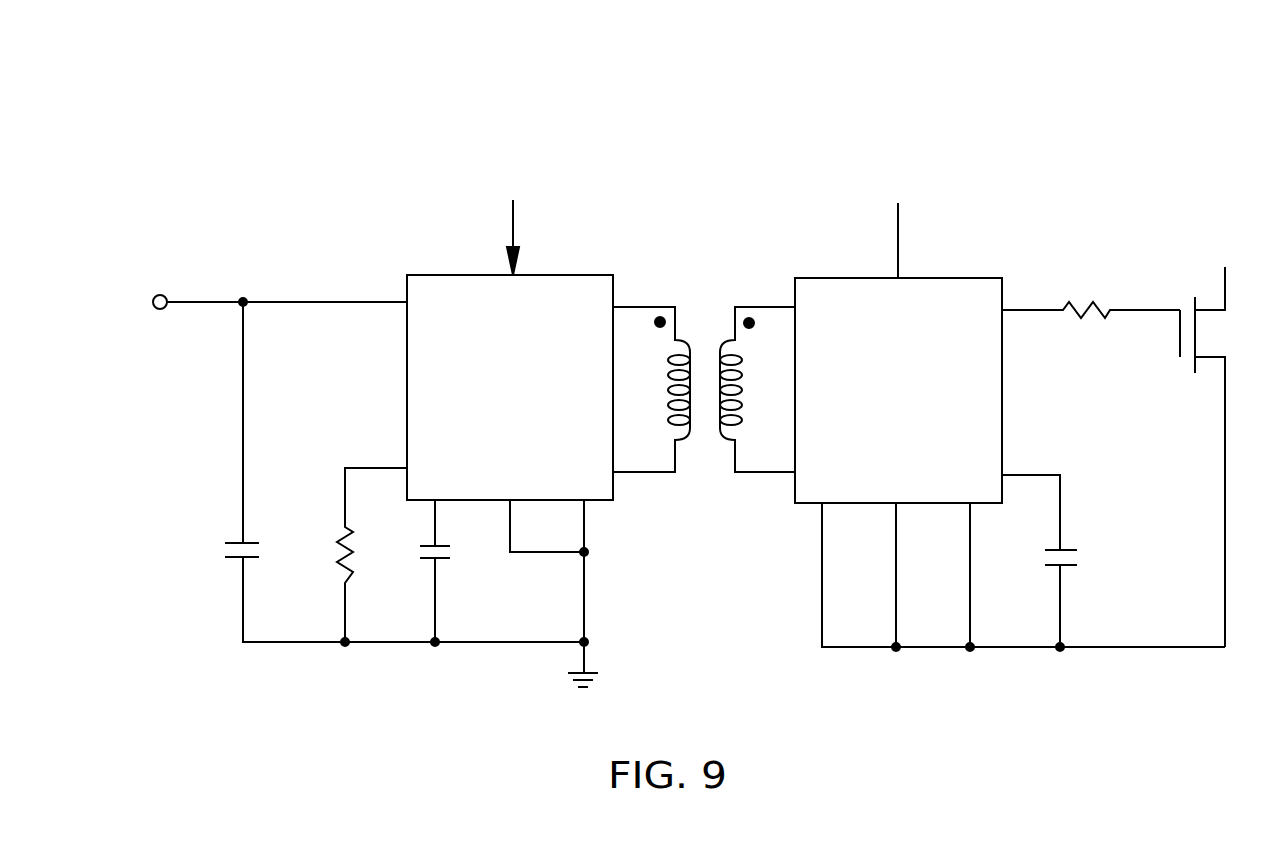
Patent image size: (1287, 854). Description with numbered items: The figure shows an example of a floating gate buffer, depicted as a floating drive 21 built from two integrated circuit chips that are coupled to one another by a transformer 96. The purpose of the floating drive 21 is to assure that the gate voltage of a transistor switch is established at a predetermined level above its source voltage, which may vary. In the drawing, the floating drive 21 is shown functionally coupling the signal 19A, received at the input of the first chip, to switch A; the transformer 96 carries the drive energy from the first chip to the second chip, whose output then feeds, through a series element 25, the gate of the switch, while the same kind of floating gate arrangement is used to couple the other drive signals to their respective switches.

The floating drive 21 is at (672, 372).
The signal 19A is at (513, 232).
The transformer 96 is at (705, 293).
The gate resistor 25 is at (1138, 310).